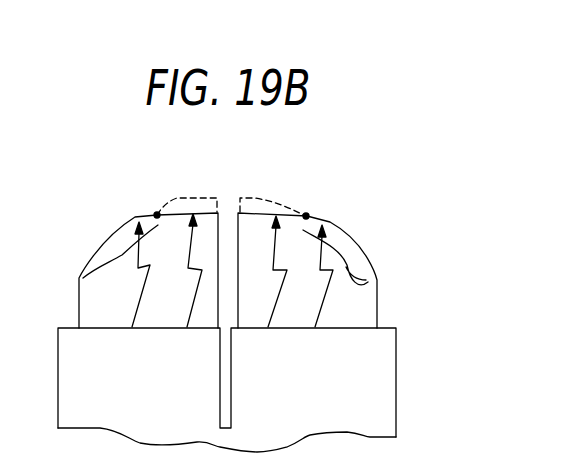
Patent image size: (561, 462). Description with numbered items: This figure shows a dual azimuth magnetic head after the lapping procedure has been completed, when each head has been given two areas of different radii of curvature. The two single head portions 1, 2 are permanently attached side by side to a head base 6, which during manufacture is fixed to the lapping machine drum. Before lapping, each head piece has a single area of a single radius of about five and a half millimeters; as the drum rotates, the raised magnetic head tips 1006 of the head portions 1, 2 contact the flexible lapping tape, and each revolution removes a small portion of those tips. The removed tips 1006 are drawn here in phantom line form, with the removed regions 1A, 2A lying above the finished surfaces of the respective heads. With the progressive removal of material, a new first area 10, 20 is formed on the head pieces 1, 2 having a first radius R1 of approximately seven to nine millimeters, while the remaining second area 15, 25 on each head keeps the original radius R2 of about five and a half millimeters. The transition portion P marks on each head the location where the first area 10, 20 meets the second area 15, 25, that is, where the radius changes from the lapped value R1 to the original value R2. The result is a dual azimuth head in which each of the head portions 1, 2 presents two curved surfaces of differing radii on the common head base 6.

The head portion 1 is at (104, 246).
The head portion 2 is at (346, 236).
The head base 6 is at (396, 355).
The second area 10 is at (214, 224).
The second area 15 is at (117, 268).
The second area 20 is at (300, 230).
The second area 25 is at (378, 283).
The removed portion of first element 1A is at (222, 216).
The removed portion of second element 2A is at (256, 211).
The magnetic head tips 1006 is at (257, 195).
The transition portion P is at (307, 216).
The first radius R1 is at (232, 270).
The second region R2 is at (228, 274).